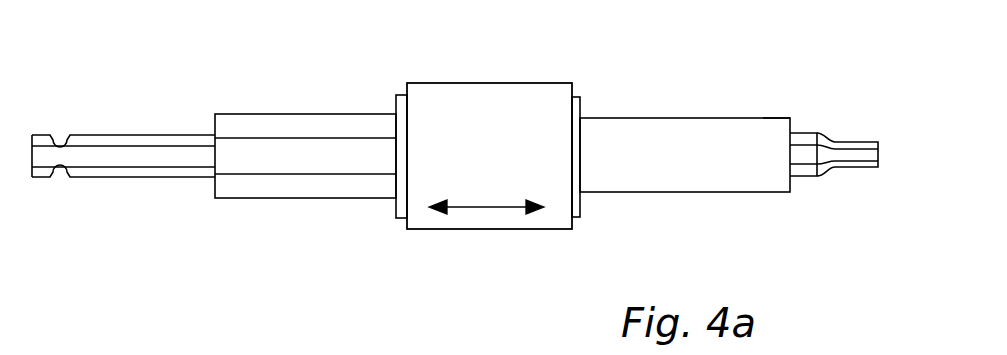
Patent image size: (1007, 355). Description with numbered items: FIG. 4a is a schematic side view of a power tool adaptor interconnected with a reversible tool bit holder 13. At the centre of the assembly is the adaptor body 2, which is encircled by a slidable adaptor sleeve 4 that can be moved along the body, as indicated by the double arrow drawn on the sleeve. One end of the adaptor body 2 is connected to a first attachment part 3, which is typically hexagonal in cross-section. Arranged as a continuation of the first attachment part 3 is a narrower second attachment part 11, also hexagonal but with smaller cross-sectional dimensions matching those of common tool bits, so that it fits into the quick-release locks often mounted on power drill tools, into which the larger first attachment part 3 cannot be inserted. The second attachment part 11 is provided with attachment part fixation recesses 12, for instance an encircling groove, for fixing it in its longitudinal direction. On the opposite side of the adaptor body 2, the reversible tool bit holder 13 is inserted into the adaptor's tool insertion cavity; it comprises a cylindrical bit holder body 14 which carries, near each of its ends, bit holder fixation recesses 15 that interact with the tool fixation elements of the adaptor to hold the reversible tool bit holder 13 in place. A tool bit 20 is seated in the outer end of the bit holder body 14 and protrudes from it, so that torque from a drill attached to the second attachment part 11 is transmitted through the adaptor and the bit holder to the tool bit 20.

The adaptor body 2 is at (400, 125).
The first attachment part 3 is at (275, 127).
The slidable adaptor sleeve 4 is at (520, 115).
The second attachment part 11 is at (107, 153).
The attachment part fixation recess 12 is at (58, 142).
The reversible tool bit holder 13 is at (588, 127).
The cylindrical bit holder body 14 is at (762, 175).
The bit holder fixation recess 15 is at (763, 122).
The tool bit 20 is at (812, 150).